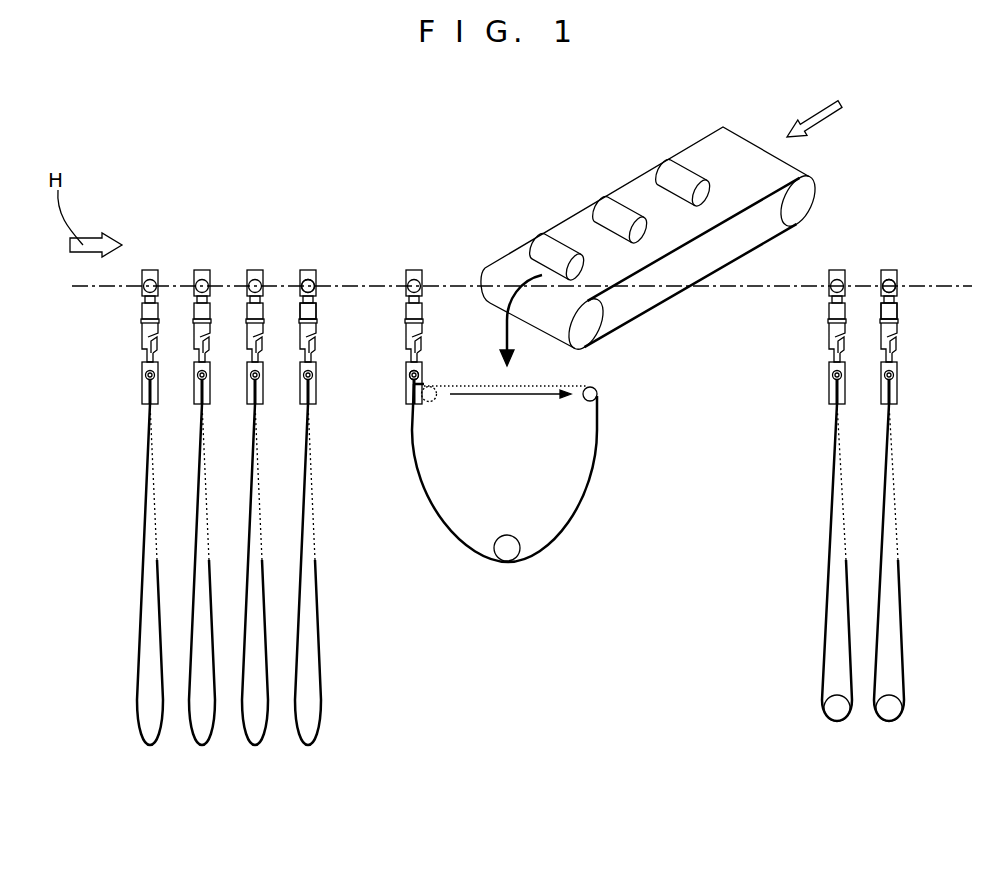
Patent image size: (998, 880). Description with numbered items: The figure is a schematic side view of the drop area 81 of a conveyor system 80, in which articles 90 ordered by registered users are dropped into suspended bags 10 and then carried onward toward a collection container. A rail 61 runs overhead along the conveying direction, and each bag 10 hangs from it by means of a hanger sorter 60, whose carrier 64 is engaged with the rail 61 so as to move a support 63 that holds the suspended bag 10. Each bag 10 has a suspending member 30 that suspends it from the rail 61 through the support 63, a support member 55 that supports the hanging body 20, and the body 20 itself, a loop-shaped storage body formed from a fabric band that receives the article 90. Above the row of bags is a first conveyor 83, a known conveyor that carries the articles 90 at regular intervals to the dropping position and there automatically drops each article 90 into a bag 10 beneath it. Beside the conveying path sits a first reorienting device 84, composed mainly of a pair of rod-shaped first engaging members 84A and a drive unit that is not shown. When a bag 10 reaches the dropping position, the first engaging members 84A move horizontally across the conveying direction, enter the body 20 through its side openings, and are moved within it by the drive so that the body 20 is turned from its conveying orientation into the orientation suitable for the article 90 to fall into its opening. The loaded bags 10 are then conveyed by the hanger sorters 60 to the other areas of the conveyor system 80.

The bag 10 is at (137, 708).
The body 20 is at (541, 473).
The suspending member 30 is at (388, 337).
The support member 55 is at (407, 374).
The hanger sorter 60 is at (598, 291).
The rail 61 is at (945, 287).
The support 63 is at (316, 310).
The carrier 64 is at (302, 284).
The conveyor system 80 is at (604, 252).
The drop area 81 is at (604, 252).
The first conveyor 83 is at (652, 298).
The first reorienting device 84 is at (656, 408).
The first engaging member 84A is at (598, 397).
The article 90 is at (547, 247).